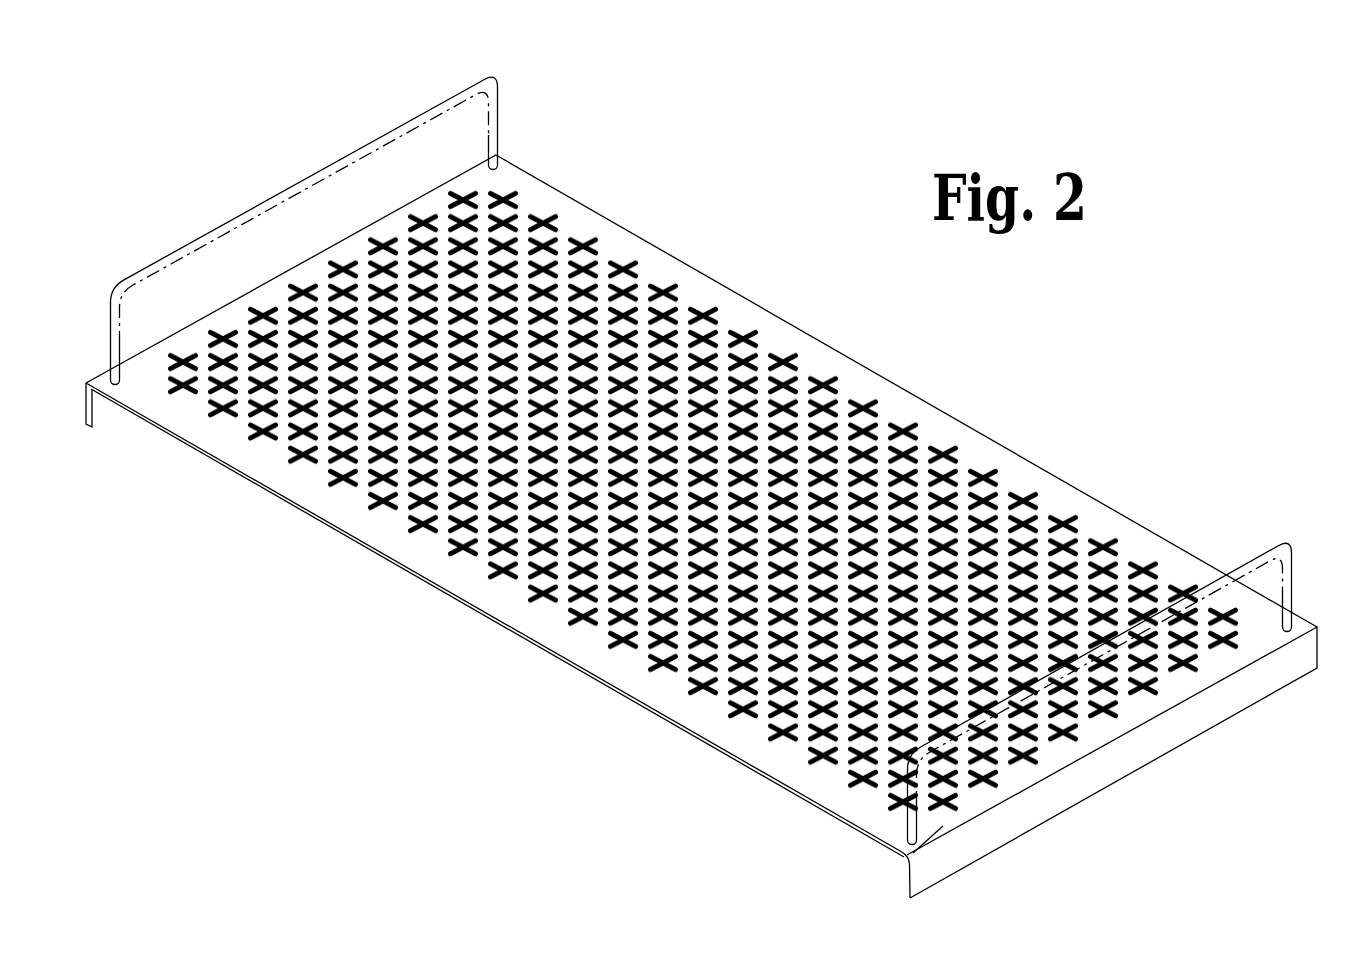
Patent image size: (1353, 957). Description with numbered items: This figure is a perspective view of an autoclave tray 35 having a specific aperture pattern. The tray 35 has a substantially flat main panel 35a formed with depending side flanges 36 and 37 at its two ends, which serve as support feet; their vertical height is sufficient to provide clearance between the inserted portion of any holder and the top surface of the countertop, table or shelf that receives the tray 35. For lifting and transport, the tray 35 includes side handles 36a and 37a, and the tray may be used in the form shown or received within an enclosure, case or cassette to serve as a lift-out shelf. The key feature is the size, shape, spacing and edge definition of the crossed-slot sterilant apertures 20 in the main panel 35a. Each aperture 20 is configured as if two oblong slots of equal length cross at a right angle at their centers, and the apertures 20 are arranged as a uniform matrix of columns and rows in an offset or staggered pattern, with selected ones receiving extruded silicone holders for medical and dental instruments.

The sterilant apertures 20 is at (520, 195).
The tray 35 is at (640, 728).
The main panel 35a is at (513, 600).
The side flange 36 is at (97, 407).
The side handle 36a is at (498, 88).
The side flange 37 is at (962, 850).
The side handle 37a is at (1285, 542).